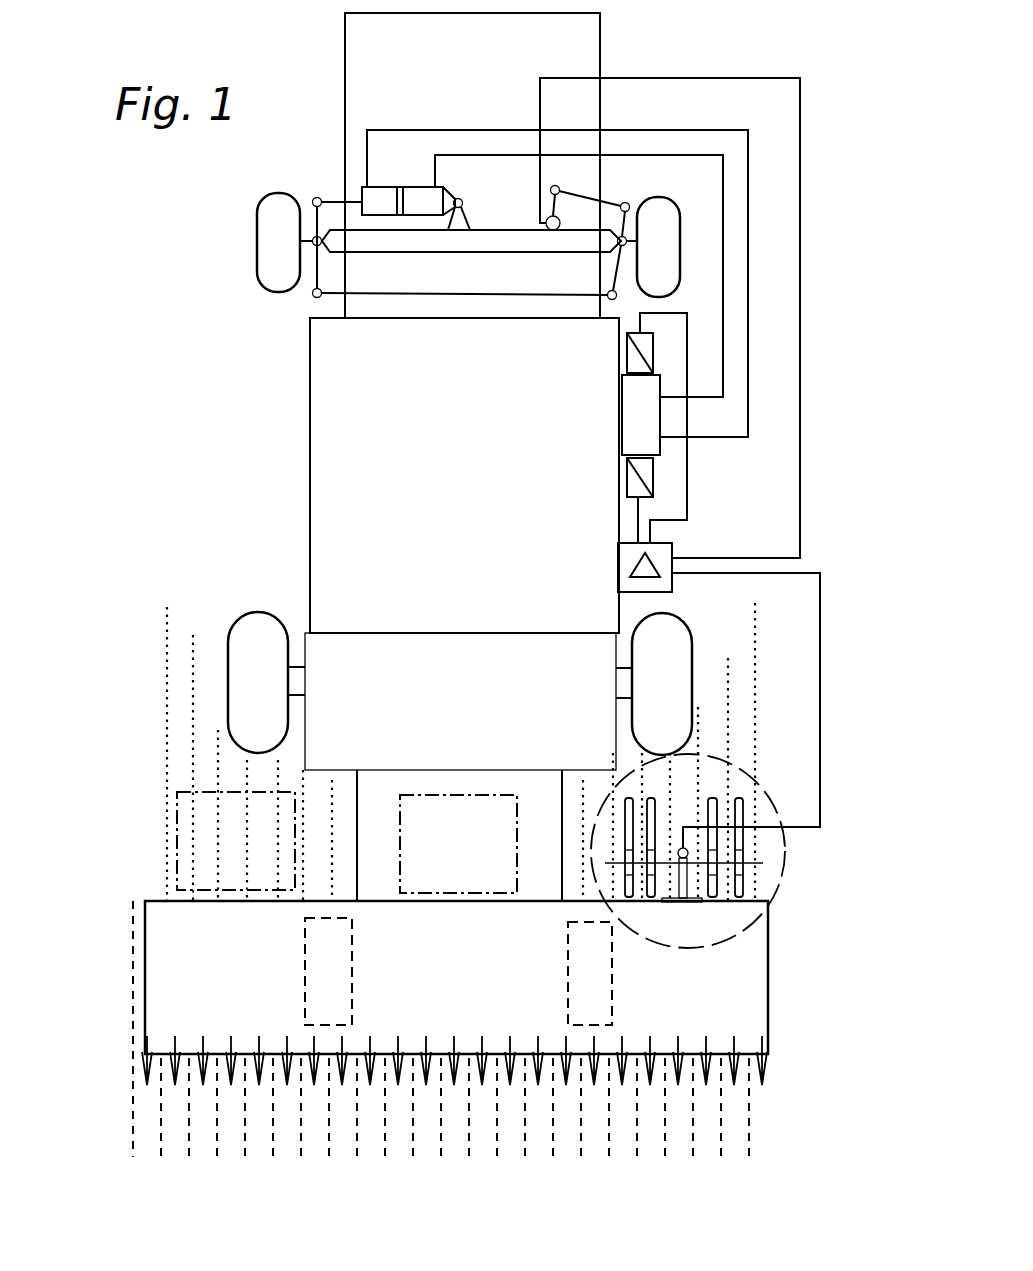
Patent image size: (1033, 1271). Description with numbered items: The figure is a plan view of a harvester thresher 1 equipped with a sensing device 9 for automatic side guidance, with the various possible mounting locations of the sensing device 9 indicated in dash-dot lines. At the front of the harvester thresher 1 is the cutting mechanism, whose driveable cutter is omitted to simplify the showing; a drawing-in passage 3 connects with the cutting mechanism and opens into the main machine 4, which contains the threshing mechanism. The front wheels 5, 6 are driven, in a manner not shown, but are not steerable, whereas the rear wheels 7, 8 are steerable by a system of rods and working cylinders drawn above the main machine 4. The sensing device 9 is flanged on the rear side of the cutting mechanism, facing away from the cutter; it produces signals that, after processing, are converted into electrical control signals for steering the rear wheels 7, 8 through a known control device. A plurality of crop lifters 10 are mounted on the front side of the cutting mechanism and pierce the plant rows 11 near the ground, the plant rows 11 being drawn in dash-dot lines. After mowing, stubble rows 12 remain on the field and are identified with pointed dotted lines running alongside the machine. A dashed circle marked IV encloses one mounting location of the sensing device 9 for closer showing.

The harvester thresher 1 is at (296, 446).
The drawing-in passage 3 is at (527, 817).
The main machine 4 is at (450, 495).
The front wheel 5 is at (262, 628).
The front wheel 6 is at (650, 642).
The rear wheel 7 is at (283, 213).
The rear wheel 8 is at (670, 222).
The sensing device 9 is at (177, 845).
The crop lifters 10 is at (653, 1050).
The plant rows 11 is at (723, 1130).
The stubble rows 12 is at (218, 765).
The detail view marker IV is at (786, 880).